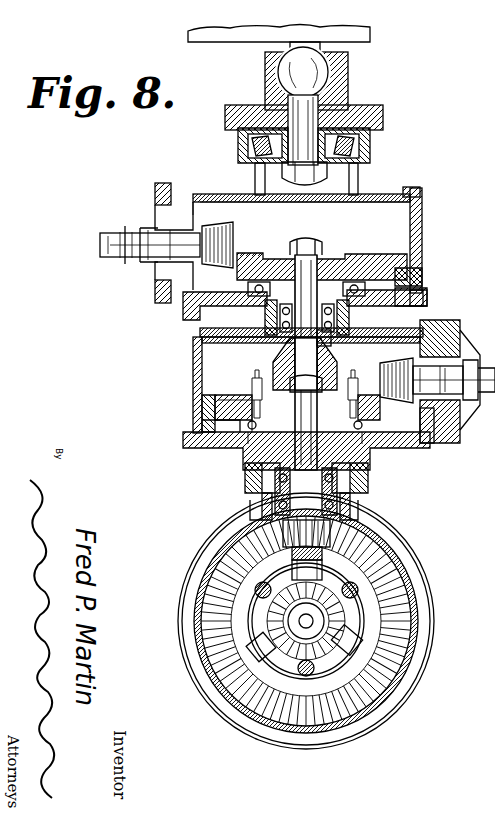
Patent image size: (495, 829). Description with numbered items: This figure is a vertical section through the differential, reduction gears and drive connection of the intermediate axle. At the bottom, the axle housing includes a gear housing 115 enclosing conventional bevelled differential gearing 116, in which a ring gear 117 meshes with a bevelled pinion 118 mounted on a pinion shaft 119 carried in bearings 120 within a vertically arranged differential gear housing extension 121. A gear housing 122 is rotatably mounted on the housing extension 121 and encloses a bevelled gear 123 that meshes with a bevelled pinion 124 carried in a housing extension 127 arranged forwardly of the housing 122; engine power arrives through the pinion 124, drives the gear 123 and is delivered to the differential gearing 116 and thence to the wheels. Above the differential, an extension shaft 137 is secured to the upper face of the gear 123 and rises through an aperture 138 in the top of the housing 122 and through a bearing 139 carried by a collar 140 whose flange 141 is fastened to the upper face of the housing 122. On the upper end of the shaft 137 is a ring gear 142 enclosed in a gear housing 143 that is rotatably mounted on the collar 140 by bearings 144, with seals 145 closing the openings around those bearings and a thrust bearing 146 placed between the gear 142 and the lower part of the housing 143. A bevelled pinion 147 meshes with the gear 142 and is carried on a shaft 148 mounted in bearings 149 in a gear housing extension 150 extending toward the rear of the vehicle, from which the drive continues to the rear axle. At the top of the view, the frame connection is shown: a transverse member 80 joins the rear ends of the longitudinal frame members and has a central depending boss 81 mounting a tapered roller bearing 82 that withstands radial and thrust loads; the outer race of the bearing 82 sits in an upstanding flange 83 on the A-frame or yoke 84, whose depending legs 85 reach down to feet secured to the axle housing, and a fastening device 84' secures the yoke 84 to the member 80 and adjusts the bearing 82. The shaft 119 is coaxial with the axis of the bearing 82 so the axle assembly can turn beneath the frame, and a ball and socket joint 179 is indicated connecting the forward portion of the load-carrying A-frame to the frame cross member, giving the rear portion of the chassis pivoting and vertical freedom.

The ball and socket joint 179 is at (266, 77).
The transverse member 80 is at (370, 105).
The fastening device 84' is at (340, 113).
The upstanding flange 83 is at (238, 144).
The bearing 82 is at (358, 134).
The depending boss 81 is at (322, 162).
The A-frame or yoke 84 is at (275, 179).
The depending legs 85 is at (372, 183).
The gear housing 143 is at (421, 224).
The gear housing extension 150 is at (175, 184).
The bearings 149 is at (155, 290).
The shaft 148 is at (150, 220).
The bevelled pinion 147 is at (228, 233).
The ring gear 142 is at (418, 265).
The thrust bearing 146 is at (358, 289).
The bearings 144 is at (422, 280).
The seals 145 is at (427, 298).
The bearing 139 is at (248, 314).
The collar 140 is at (362, 328).
The flange 141 is at (262, 330).
The gear housing 122 is at (193, 428).
The bevelled gear 123 is at (198, 413).
The extension shaft 137 is at (297, 341).
The aperture 138 is at (328, 347).
The bevelled pinion 124 is at (423, 340).
The housing extension 127 is at (424, 428).
The pinion shaft 119 is at (246, 478).
The bearings 120 is at (348, 502).
The differential gear housing extension 121 is at (263, 506).
The bevelled pinion 118 is at (252, 524).
The gear housing 115 is at (207, 580).
The differential gearing 116 is at (235, 636).
The ring gear 117 is at (222, 692).